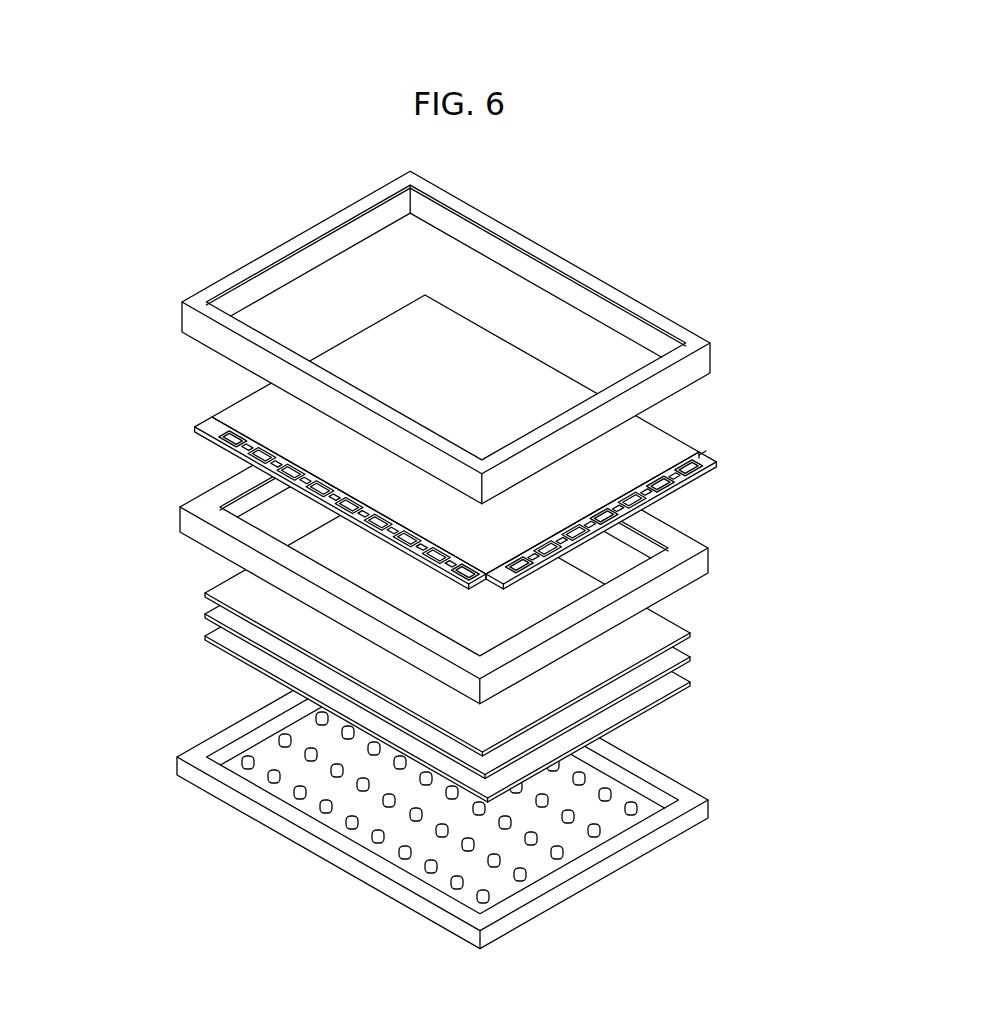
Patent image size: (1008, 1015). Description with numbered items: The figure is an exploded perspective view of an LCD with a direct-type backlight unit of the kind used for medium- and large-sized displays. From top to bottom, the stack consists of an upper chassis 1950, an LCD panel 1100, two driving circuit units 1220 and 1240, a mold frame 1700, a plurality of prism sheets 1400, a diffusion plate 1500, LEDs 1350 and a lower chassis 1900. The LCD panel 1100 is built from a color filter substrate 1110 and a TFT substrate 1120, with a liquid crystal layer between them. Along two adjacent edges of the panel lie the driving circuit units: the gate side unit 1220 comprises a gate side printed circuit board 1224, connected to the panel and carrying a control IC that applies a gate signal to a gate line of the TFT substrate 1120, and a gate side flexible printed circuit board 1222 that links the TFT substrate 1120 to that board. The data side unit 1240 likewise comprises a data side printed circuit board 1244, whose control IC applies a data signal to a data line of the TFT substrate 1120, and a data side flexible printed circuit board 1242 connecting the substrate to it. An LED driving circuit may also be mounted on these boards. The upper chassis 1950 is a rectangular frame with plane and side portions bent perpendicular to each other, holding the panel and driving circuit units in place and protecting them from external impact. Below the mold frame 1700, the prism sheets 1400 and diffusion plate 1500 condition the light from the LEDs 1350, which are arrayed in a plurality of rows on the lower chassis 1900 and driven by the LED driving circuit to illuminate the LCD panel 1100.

The upper chassis 1950 is at (710, 360).
The LCD panel 1100 is at (543, 434).
The first substrate 1110 is at (672, 442).
The TFT substrate 1120 is at (699, 456).
The driving circuit unit 1240 is at (257, 498).
The data side flexible printed circuit board 1242 is at (207, 417).
The data side printed circuit board 1244 is at (205, 432).
The driving circuit unit 1220 is at (690, 520).
The gate side flexible printed circuit board 1222 is at (712, 465).
The gate side printed circuit board 1224 is at (712, 479).
The mold frame 1700 is at (708, 560).
The prism sheets 1400 is at (690, 633).
The diffusion plate 1500 is at (690, 684).
The LEDs 1350 is at (612, 797).
The lower chassis 1900 is at (497, 787).